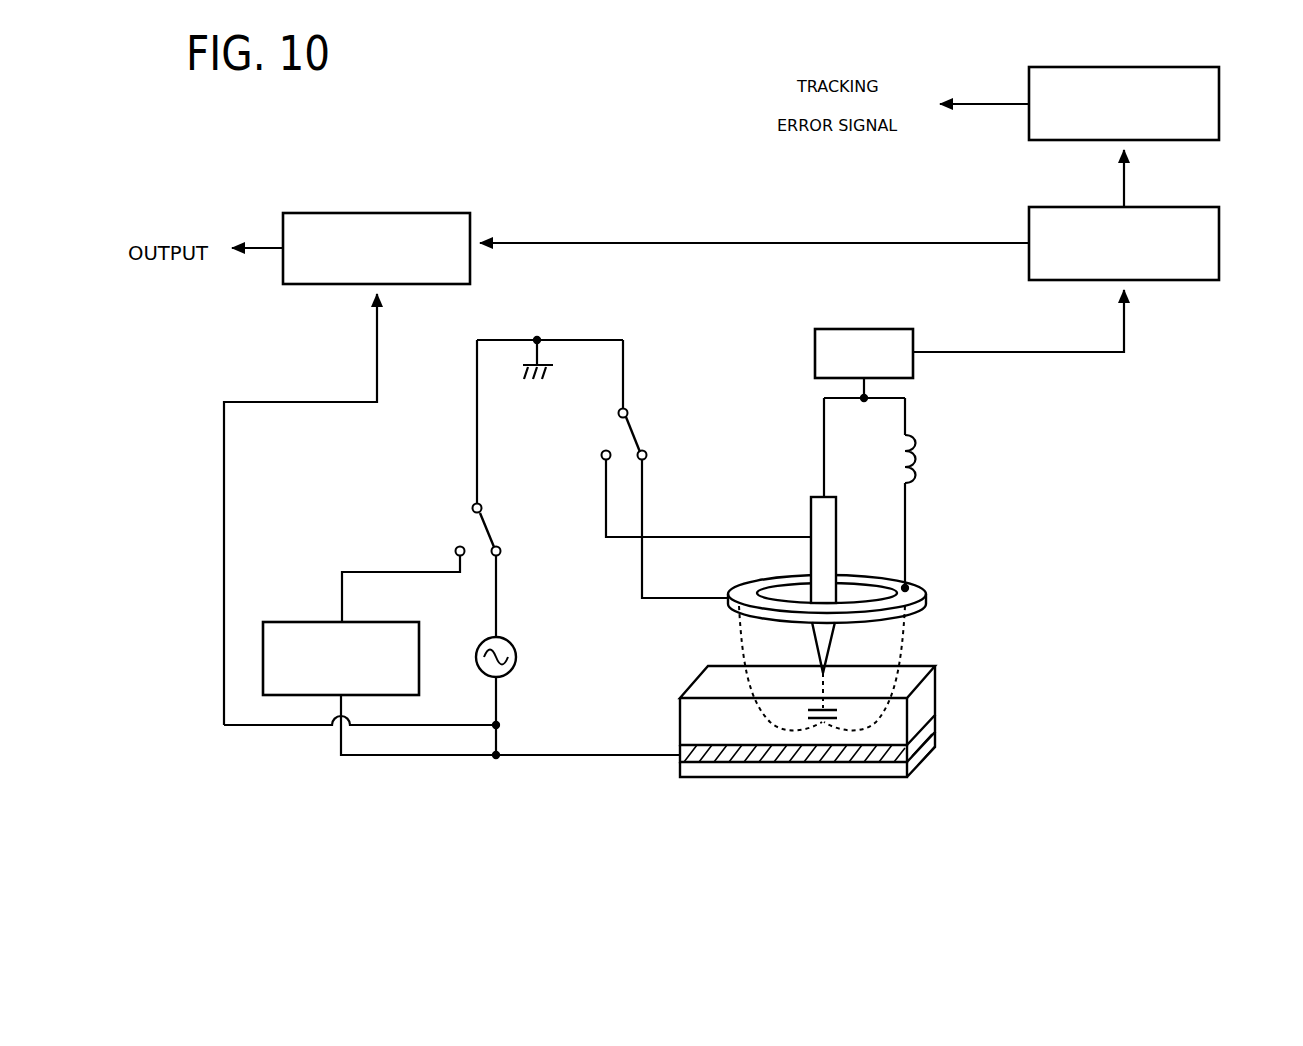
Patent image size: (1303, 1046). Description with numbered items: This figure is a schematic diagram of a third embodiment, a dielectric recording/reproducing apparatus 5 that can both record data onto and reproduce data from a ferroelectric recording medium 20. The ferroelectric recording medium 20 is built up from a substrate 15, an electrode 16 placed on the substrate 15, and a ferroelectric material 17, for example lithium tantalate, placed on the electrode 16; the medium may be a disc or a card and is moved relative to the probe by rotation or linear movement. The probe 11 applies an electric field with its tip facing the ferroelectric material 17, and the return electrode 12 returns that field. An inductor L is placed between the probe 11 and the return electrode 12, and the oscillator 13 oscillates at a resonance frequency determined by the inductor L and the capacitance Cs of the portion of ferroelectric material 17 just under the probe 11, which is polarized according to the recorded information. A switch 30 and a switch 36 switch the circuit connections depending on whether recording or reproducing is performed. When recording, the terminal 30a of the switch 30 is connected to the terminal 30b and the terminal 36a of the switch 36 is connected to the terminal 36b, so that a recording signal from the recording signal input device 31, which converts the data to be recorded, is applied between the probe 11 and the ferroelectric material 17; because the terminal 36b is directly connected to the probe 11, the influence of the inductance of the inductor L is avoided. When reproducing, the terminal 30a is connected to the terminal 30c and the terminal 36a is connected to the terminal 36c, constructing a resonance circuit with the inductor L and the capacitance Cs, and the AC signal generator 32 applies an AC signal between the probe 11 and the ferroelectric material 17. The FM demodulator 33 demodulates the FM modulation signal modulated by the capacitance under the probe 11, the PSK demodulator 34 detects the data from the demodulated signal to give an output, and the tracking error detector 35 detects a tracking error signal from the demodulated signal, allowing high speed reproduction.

The dielectric recording/reproducing apparatus 5 is at (742, 832).
The probe 11 is at (833, 641).
The return electrode 12 is at (927, 600).
The oscillator 13 is at (815, 353).
The substrate 15 is at (846, 754).
The electrode 16 is at (935, 725).
The ferroelectric material 17 is at (930, 690).
The ferroelectric recording medium 20 is at (878, 721).
The switch 30 is at (479, 534).
The terminal 30a is at (472, 508).
The terminal 30b is at (455, 551).
The terminal 30c is at (501, 554).
The recording signal input device 31 is at (293, 622).
The AC signal generator 32 is at (516, 654).
The FM demodulator 33 is at (1220, 243).
The PSK demodulator 34 is at (397, 213).
The tracking error detector 35 is at (1220, 104).
The switch 36 is at (623, 438).
The terminal 36a is at (618, 413).
The terminal 36b is at (601, 455).
The terminal 36c is at (647, 458).
The inductor L is at (922, 461).
The capacitance Cs is at (842, 713).